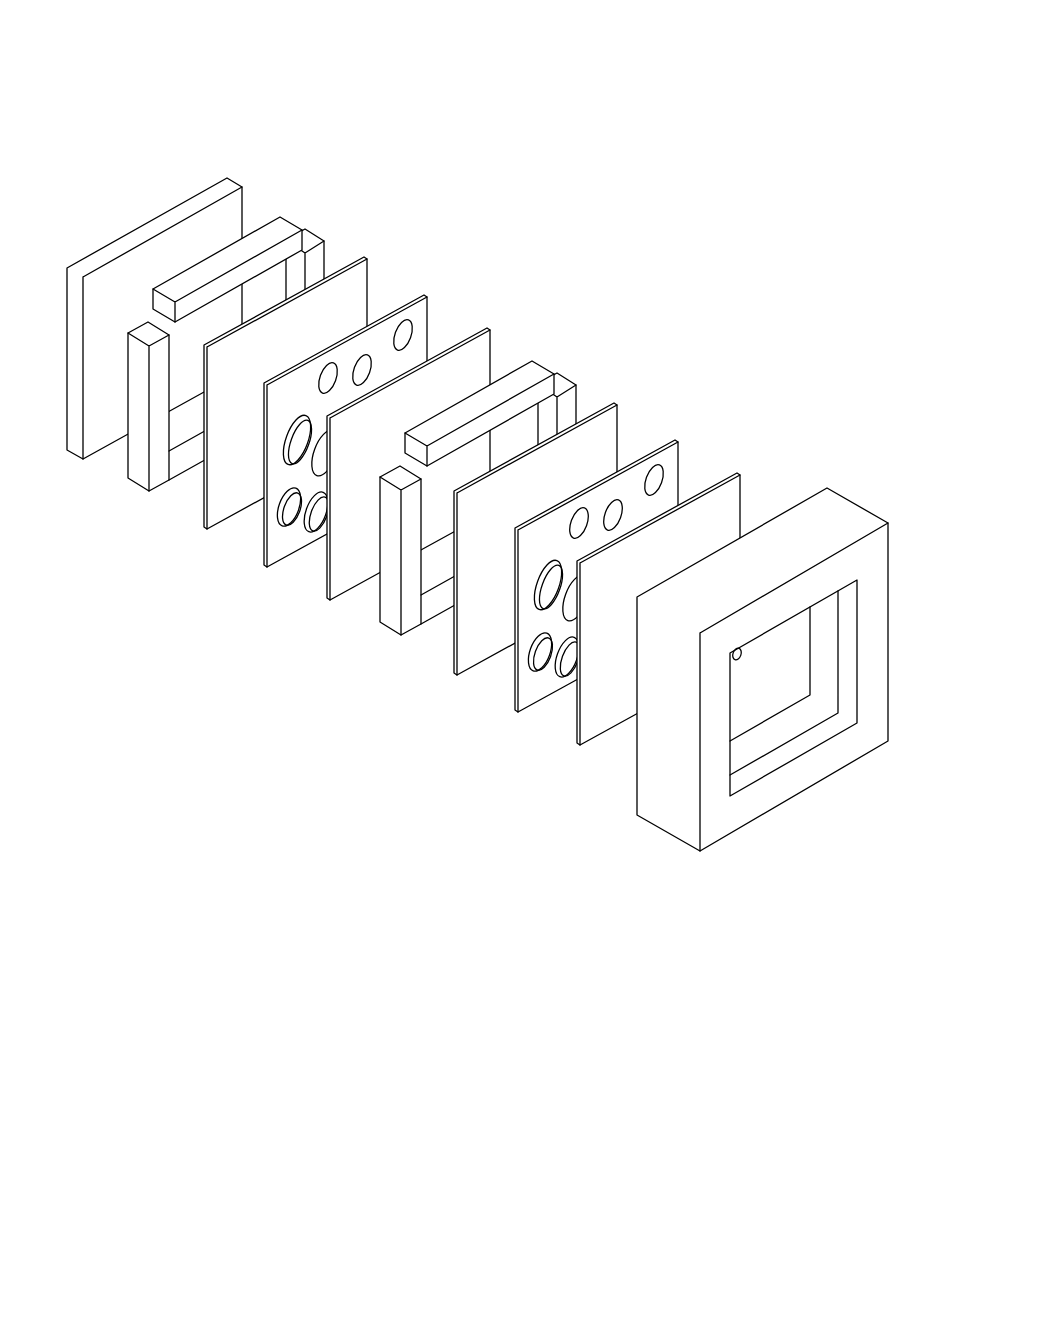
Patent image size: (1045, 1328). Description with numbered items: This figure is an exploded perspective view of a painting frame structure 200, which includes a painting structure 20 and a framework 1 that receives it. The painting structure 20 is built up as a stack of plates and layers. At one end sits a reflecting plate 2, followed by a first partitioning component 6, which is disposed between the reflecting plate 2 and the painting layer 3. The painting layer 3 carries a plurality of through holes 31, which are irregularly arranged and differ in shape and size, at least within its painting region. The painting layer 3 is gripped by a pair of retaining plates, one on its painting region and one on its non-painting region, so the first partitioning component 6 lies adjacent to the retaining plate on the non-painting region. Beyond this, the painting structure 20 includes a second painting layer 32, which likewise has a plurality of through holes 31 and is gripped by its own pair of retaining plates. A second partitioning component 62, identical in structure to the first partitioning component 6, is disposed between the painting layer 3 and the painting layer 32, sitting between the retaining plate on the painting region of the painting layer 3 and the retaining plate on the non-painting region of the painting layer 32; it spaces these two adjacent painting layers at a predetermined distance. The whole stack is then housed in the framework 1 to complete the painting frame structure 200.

The painting frame structure 200 is at (879, 45).
The framework 1 is at (783, 548).
The reflecting plate 2 is at (187, 207).
The painting layer 3 is at (428, 296).
The first partitioning component 6 is at (243, 253).
The painting structure 20 is at (484, 417).
The through holes 31 is at (318, 512).
The painting layer 32 is at (678, 443).
The second partitioning component 62 is at (503, 393).